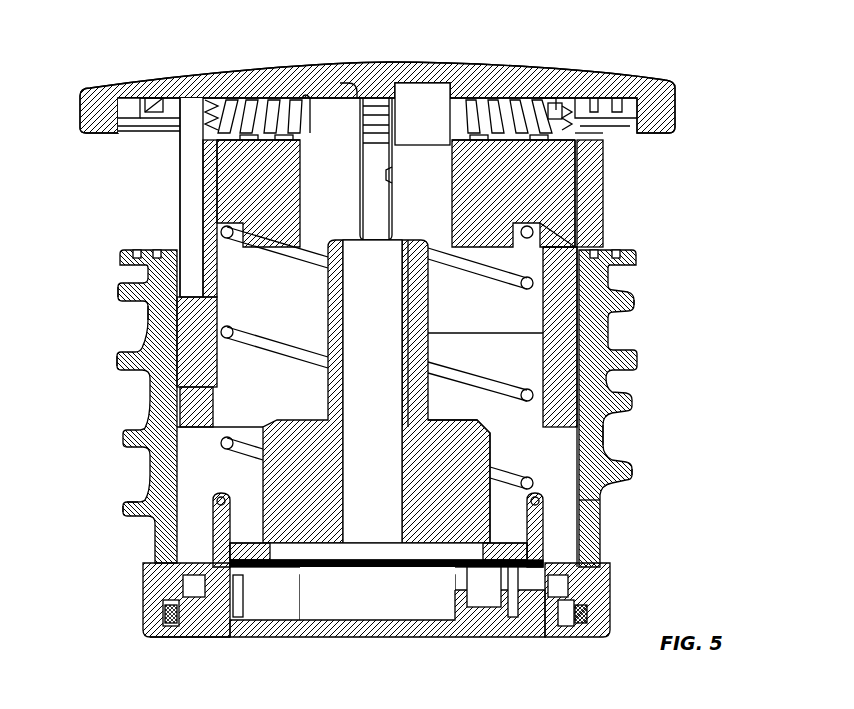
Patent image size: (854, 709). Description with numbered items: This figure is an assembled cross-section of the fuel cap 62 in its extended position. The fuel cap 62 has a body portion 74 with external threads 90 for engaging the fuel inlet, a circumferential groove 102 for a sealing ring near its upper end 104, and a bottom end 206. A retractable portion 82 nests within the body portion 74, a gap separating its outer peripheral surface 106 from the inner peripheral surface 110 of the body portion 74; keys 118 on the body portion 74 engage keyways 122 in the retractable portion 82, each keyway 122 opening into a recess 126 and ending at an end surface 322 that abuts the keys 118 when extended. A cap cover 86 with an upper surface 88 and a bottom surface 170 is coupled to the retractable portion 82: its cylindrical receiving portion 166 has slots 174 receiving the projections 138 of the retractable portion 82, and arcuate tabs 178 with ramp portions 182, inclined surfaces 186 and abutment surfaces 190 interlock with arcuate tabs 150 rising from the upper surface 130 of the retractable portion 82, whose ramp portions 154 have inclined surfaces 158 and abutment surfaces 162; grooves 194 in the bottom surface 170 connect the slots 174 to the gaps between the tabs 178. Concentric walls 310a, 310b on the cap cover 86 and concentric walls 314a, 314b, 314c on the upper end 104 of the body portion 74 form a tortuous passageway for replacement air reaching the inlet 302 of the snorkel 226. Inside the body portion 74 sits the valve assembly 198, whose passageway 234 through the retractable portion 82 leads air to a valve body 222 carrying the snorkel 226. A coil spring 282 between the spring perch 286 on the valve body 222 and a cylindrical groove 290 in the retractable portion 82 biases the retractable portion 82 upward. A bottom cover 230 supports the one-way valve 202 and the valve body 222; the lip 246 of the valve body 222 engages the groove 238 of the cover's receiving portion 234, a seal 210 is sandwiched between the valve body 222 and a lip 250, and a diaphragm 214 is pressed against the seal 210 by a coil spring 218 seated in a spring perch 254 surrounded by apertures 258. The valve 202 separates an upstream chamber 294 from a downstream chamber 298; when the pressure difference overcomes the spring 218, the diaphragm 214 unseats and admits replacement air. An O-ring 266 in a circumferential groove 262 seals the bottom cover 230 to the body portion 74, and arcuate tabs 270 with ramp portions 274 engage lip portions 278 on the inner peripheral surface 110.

The fuel cap 62 is at (665, 55).
The cap cover 86 is at (655, 115).
The concentric wall 310a is at (118, 103).
The concentric wall 310b is at (152, 100).
The arcuate tabs 178 is at (150, 128).
The ramp portion 154 is at (210, 100).
The arcuate tabs 150 is at (258, 100).
The shallow channels or grooves 194 is at (308, 95).
The upper surface of the cap cover 88 is at (345, 84).
The bottom surface of the cap cover 170 is at (363, 98).
The axially-extending slots 174 is at (392, 172).
The receiving portion 166 is at (414, 100).
The upper surface of the retractable portion 130 is at (486, 105).
The abutment surface 190 is at (545, 102).
The inclined surface 158 is at (556, 98).
The abutment surface 162 is at (566, 118).
The inclined surface 186 is at (580, 136).
The axially-extending projections 138 is at (300, 205).
The retractable portion 82 is at (556, 195).
The outer peripheral surface of the retractable portion 106 is at (580, 178).
The cylindrical groove 290 is at (580, 247).
The keyways 122 is at (195, 275).
The recess 126 is at (188, 172).
The ramp portion 182 is at (207, 172).
The snorkel 226 is at (430, 290).
The coil spring 282 is at (470, 370).
The keys 118 is at (265, 343).
The spring perch 286 is at (240, 490).
The upstream chamber 294 is at (345, 415).
The inlet 302 is at (368, 240).
The valve body 222 is at (485, 445).
The seal 210 is at (215, 548).
The one-way valve 202 is at (368, 550).
The diaphragm 214 is at (312, 580).
The coil spring 218 is at (305, 610).
The spring perch 254 is at (413, 637).
The downstream chamber 298 is at (478, 590).
The apertures 258 is at (240, 612).
The ramp portions 274 is at (190, 580).
The arcuate tabs 270 is at (170, 590).
The O-ring 266 is at (165, 612).
The bottom end of the body portion 206 is at (162, 637).
The lip portions 278 is at (605, 593).
The lip 250 is at (560, 580).
The bottom cover 230 is at (566, 630).
The circumferential groove 262 is at (606, 637).
The lip 246 is at (600, 500).
The passageway 234 is at (577, 333).
The body portion 74 is at (620, 398).
The concentric wall 314a is at (125, 258).
The intermediate concentric wall 314b is at (140, 270).
The concentric wall 314c is at (130, 300).
The end surfaces 322 is at (165, 372).
The valve assembly 198 is at (200, 473).
The circumferential groove 238 is at (135, 503).
The upper end of the body portion 104 is at (628, 255).
The circumferential groove 102 is at (612, 320).
The external threads 90 is at (606, 425).
The inner peripheral surface of the body portion 110 is at (600, 500).